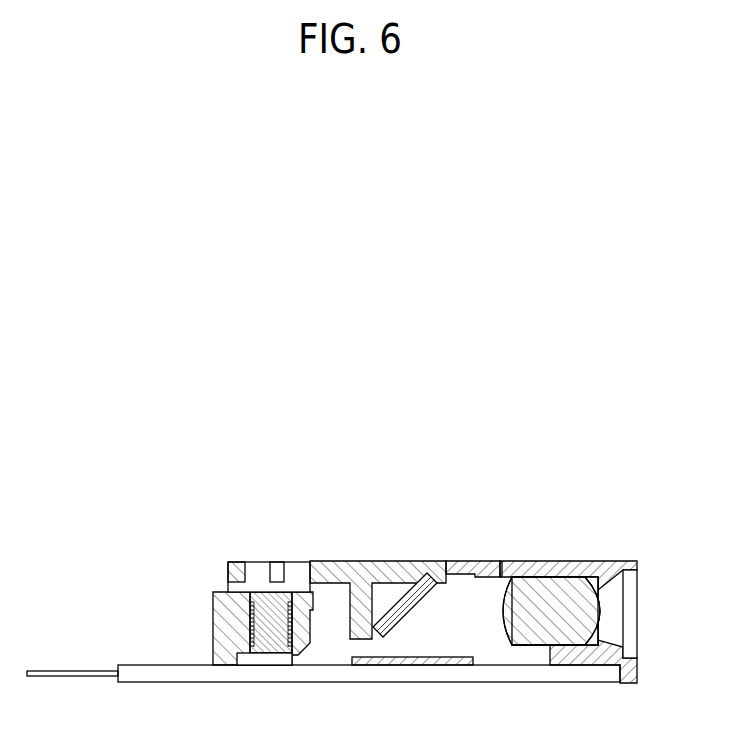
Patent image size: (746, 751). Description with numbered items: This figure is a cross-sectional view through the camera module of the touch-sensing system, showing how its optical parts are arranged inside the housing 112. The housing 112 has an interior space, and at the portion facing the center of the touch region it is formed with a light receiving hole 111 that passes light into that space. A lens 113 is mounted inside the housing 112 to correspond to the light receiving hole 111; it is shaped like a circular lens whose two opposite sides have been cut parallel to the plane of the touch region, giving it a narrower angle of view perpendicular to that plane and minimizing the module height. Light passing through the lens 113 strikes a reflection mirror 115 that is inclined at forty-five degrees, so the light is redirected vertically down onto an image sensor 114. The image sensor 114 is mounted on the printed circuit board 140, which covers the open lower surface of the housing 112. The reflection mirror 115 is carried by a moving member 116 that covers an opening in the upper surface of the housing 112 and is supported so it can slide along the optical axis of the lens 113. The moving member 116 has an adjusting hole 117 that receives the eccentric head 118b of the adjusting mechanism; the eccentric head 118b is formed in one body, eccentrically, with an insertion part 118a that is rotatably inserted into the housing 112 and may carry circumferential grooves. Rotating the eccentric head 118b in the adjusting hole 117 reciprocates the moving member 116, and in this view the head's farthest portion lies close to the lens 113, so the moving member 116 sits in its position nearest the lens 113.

The light receiving hole 111 is at (615, 612).
The housing 112 is at (583, 568).
The lens 113 is at (537, 632).
The image sensor 114 is at (450, 662).
The reflection mirror 115 is at (398, 622).
The moving member 116 is at (402, 568).
The adjusting hole 117 is at (312, 567).
The insertion part 118a is at (270, 643).
The eccentric head 118b is at (258, 568).
The printed circuit board 140 is at (60, 676).